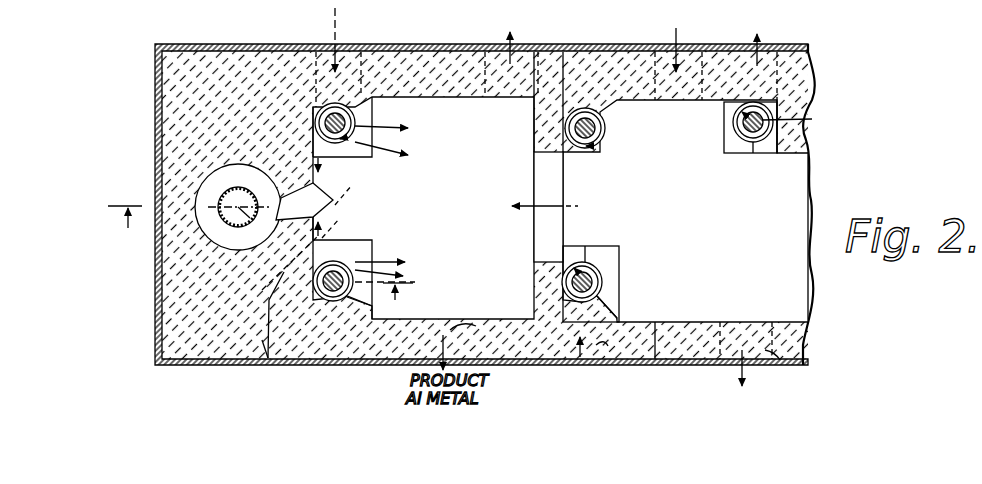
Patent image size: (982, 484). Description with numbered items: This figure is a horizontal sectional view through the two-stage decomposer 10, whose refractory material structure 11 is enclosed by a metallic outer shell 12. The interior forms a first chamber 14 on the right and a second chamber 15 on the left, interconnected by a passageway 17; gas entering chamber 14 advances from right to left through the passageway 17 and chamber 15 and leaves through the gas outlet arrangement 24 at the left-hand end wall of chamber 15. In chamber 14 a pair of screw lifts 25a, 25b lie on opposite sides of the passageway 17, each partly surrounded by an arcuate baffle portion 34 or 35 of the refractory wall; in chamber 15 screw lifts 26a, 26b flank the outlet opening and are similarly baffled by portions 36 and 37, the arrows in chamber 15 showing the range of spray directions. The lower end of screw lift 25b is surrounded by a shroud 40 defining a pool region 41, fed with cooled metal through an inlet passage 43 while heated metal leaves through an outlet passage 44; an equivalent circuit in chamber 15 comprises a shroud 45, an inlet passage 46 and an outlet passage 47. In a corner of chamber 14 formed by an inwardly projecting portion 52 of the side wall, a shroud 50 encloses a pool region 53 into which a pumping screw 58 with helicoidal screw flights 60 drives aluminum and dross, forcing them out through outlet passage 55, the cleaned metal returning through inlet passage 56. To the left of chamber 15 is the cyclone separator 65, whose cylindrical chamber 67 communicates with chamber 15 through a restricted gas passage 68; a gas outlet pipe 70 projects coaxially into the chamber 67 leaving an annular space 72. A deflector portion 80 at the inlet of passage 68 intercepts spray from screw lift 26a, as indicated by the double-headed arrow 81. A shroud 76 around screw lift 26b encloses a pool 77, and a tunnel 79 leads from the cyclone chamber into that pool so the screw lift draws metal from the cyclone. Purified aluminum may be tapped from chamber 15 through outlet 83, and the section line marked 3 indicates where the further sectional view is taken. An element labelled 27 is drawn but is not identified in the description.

The two-stage decomposer 10 is at (214, 368).
The refractory material structure 11 is at (655, 360).
The metallic outer shell 12 is at (508, 364).
The first enclosed chamber 14 is at (692, 214).
The second enclosed chamber 15 is at (478, 176).
The passageway 17 is at (561, 185).
The gas outlet arrangement 24 is at (220, 194).
The screw lift 25a is at (596, 146).
The screw lift 25b is at (598, 288).
The screw lift 26a is at (352, 118).
The screw lift 26b is at (338, 258).
The roller 27 is at (597, 128).
The section line 3- 3 is at (260, 258).
The arcuate baffle portion 34 is at (581, 98).
The arcuate baffle portion 35 is at (575, 320).
The arcuate baffle portion 36 is at (314, 106).
The arcuate baffle portion 37 is at (332, 300).
The shroud 40 is at (620, 256).
The pool region 41 is at (585, 260).
The aluminum inlet passage 43 is at (599, 348).
The aluminum outlet passage 44 is at (776, 358).
The shroud 45 is at (352, 160).
The molten metal inlet passage 46 is at (366, 55).
The molten metal outlet passage 47 is at (480, 55).
The shroud 50 is at (726, 154).
The inwardly projecting portion 52 is at (806, 152).
The pool region 53 is at (755, 146).
The outlet passage 55 is at (765, 68).
The inlet passage 56 is at (696, 72).
The pumping screw 58 is at (812, 119).
The helicoidal screw flights 60 is at (740, 123).
The cyclone separator 65 is at (222, 244).
The cylindrical chamber 67 is at (210, 232).
The gas passage 68 is at (322, 236).
The gas outlet pipe 70 is at (222, 182).
The annular space 72 is at (258, 191).
The shroud 76 is at (374, 250).
The pool 77 is at (348, 292).
The tunnel 79 is at (268, 358).
The deflector portion 80 is at (340, 203).
The double-headed arrow 81 is at (320, 162).
The outlet 83 is at (476, 324).